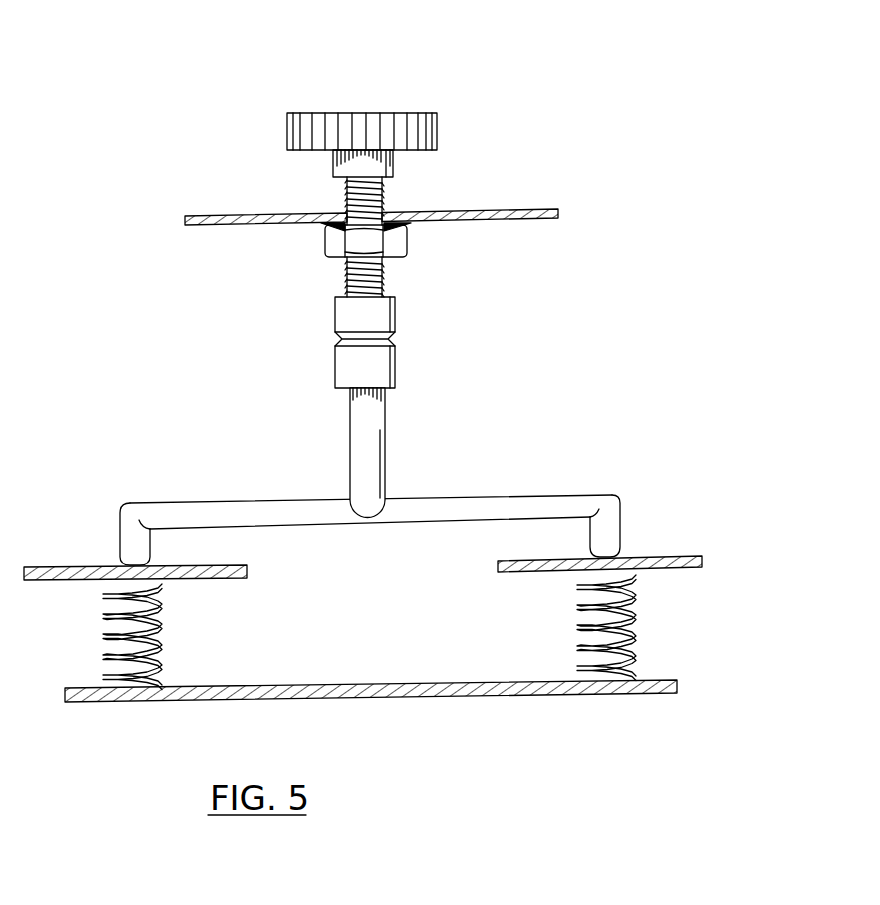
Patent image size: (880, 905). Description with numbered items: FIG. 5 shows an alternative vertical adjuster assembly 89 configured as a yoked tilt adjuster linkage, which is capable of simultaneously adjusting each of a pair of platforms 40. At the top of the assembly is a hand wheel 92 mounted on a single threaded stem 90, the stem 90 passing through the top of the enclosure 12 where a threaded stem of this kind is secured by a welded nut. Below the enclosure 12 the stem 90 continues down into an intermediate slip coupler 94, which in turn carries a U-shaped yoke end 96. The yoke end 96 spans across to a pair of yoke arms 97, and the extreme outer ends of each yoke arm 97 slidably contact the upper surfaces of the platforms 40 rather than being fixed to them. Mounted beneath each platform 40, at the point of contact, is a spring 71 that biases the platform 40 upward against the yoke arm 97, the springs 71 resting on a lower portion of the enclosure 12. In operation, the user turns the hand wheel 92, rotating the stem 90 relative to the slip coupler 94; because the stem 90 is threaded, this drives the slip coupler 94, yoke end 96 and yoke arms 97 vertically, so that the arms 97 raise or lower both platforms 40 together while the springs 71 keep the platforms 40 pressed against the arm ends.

The vertical adjuster assembly 89 is at (473, 83).
The hand wheel 92 is at (288, 118).
The stem 90 is at (383, 197).
The enclosure 12 is at (498, 223).
The slip coupler 94 is at (340, 340).
The yoke end 96 is at (388, 463).
The yoke arm 97 is at (127, 540).
The platform 40 is at (497, 573).
The spring 71 is at (105, 636).